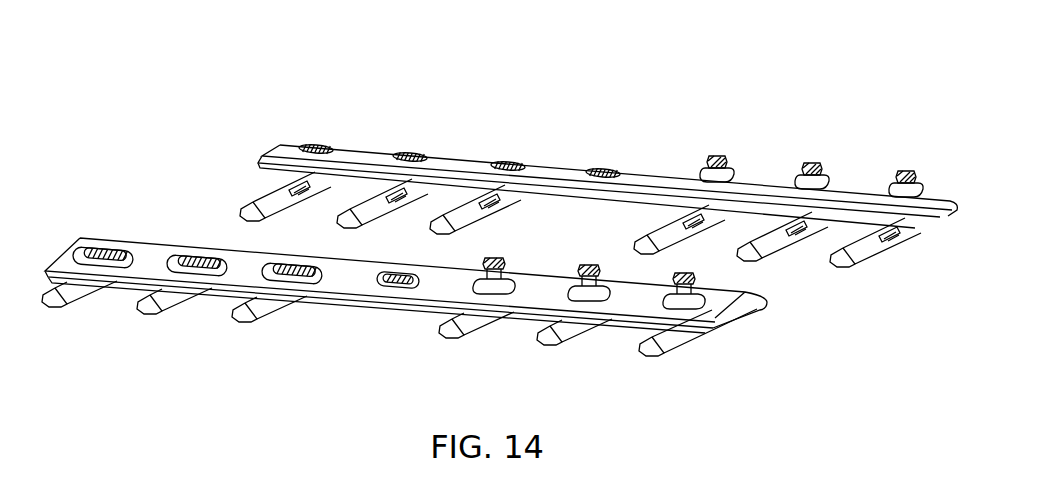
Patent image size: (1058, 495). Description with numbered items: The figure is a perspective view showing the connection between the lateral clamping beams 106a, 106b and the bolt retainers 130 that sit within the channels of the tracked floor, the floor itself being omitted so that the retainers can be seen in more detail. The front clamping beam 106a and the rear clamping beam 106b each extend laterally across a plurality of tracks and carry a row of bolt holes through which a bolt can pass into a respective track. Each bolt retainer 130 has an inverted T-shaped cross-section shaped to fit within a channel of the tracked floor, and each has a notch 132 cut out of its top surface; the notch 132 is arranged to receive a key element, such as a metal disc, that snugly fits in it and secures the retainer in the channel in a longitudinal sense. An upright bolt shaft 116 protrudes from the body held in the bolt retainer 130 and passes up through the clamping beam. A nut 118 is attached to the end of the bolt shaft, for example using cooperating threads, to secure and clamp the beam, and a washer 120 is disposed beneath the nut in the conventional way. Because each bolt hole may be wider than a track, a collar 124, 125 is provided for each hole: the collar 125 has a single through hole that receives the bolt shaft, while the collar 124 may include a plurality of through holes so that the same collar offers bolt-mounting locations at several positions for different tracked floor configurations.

The front clamping beam 106a is at (433, 287).
The rear clamping beam 106b is at (638, 172).
The bolt shaft 116 is at (597, 292).
The nut 118 is at (717, 158).
The washer 120 is at (733, 172).
The collar 124 is at (297, 272).
The collar 125 is at (500, 292).
The bolt retainer 130 is at (670, 340).
The notch 132 is at (887, 235).